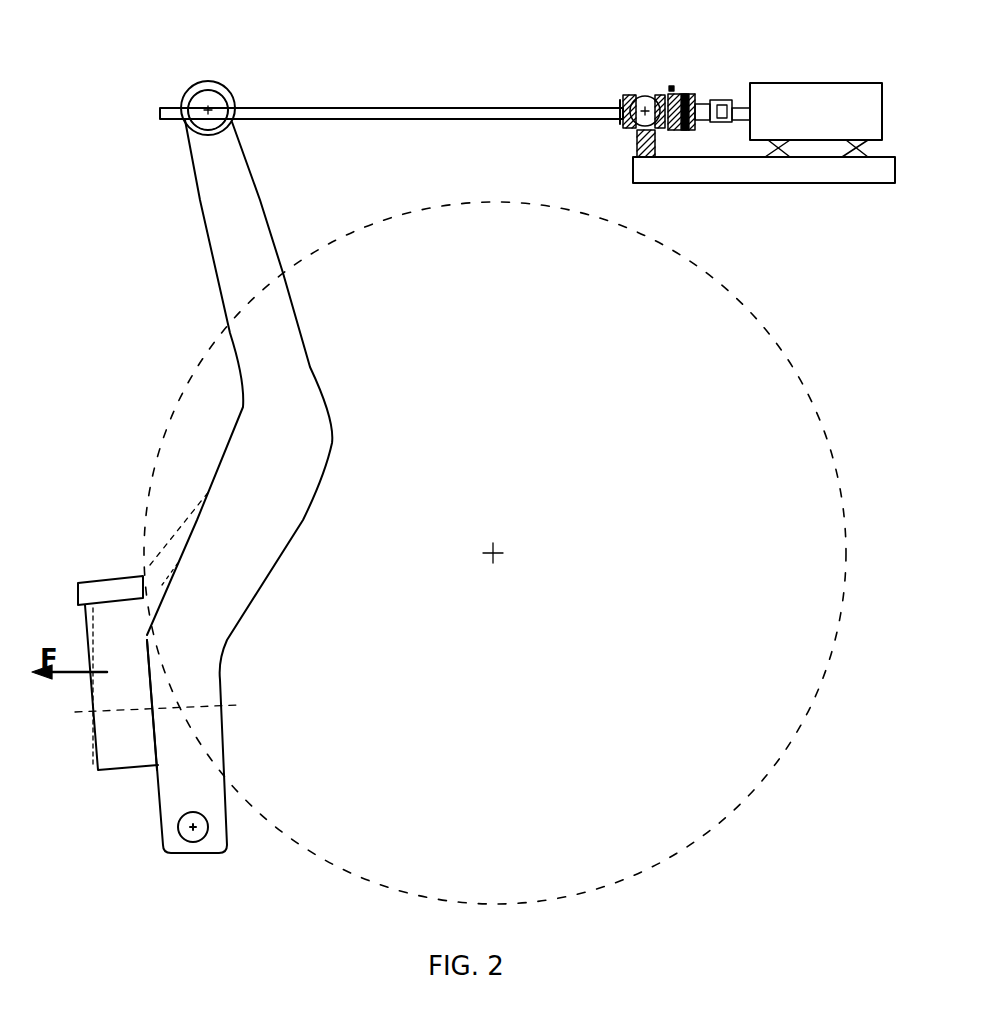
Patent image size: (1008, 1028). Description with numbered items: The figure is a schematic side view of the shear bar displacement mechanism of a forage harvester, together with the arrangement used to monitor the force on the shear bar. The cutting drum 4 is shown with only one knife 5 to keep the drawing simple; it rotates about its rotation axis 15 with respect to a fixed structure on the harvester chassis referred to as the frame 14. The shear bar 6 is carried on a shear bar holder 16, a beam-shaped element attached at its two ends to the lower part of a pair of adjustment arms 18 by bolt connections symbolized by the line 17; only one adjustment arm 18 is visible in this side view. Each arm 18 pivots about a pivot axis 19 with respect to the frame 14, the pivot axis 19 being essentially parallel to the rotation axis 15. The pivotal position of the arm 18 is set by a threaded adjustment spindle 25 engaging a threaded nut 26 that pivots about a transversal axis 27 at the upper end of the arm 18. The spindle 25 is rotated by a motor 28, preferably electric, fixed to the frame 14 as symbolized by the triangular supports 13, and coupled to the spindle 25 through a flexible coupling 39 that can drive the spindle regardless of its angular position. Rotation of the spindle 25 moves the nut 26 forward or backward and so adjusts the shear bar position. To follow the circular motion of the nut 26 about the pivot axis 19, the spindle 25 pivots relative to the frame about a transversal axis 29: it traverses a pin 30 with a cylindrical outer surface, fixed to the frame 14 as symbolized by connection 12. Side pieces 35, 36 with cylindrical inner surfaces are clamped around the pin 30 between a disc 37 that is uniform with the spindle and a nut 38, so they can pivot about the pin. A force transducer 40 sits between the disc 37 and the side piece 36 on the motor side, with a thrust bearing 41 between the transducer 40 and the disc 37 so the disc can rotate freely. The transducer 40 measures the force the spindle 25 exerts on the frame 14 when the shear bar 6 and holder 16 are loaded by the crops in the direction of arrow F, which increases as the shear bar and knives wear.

The cutting drum 4 is at (792, 402).
The knife 5 is at (170, 525).
The shear bar 6 is at (102, 588).
The connection 12 is at (640, 148).
The triangular supports 13 is at (847, 148).
The frame 14 is at (652, 173).
The rotation axis 15 is at (496, 552).
The shear bar holder 16 is at (127, 687).
The line 17 is at (232, 697).
The adjustment arm 18 is at (302, 432).
The pivot axis 19 is at (192, 828).
The threaded adjustment spindle 25 is at (360, 107).
The threaded nut 26 is at (217, 120).
The transversal axis 27 is at (208, 110).
The motor 28 is at (817, 103).
The transversal axis 29 is at (645, 105).
The pin 30 is at (637, 118).
The side piece 35 is at (637, 95).
The side piece 36 is at (660, 130).
The disc 37 is at (693, 125).
The nut 38 is at (623, 102).
The flexible coupling 39 is at (720, 115).
The force transducer 40 is at (673, 93).
The thrust bearing 41 is at (686, 94).